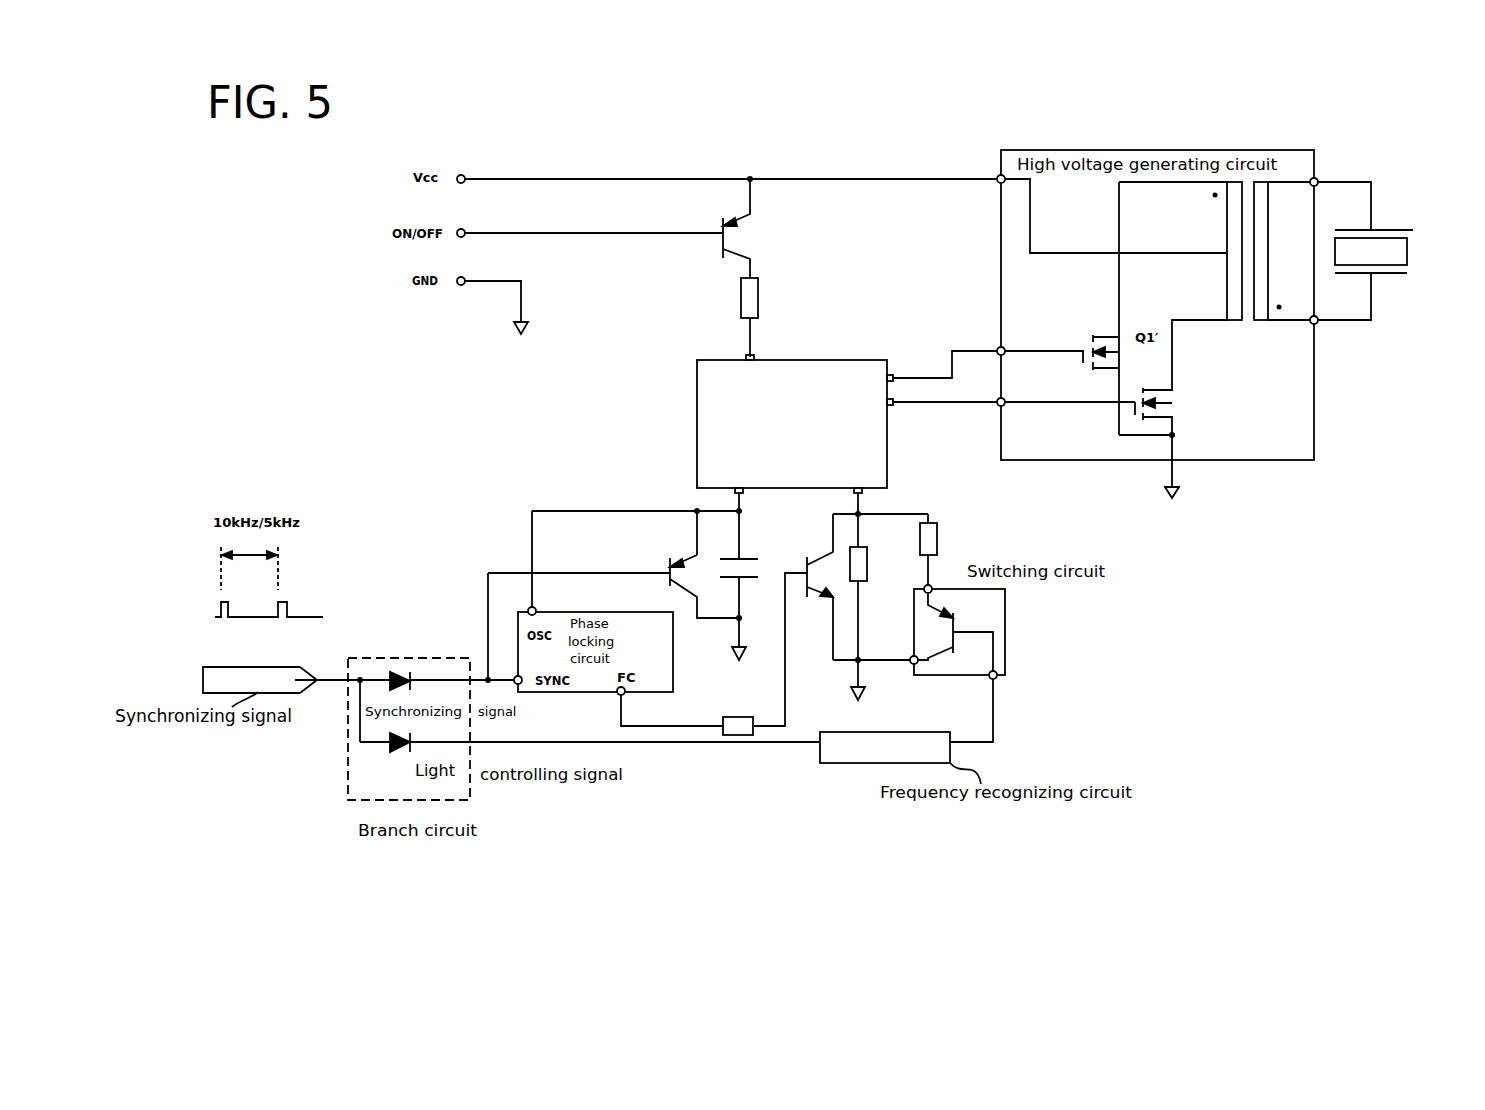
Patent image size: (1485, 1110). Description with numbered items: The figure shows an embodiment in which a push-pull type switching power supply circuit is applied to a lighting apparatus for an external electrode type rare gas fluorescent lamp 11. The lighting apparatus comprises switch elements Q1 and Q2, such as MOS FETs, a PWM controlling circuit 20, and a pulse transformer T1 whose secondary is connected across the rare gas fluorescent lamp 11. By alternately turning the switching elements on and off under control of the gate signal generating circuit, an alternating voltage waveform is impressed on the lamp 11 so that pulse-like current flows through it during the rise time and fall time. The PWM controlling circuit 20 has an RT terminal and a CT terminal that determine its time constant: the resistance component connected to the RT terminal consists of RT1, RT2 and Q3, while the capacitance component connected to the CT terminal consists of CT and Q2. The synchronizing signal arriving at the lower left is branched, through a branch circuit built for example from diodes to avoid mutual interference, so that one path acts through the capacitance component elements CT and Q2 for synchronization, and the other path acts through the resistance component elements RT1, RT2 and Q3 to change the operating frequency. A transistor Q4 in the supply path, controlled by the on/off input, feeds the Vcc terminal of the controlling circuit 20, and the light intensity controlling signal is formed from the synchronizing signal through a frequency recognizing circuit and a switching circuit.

The external electrode type rare gas fluorescent lamp 11 is at (1410, 238).
The PWM controlling circuit 20 is at (697, 408).
The switch element Q1 is at (1181, 403).
The switch element Q2 is at (658, 558).
The transistor of resistance component Q3 is at (955, 647).
The transistor Q4 is at (760, 228).
The pulse transformer T1 is at (1214, 308).
The timing capacitor CT is at (748, 582).
The timing resistor RT1 is at (875, 584).
The timing resistor RT2 is at (942, 531).